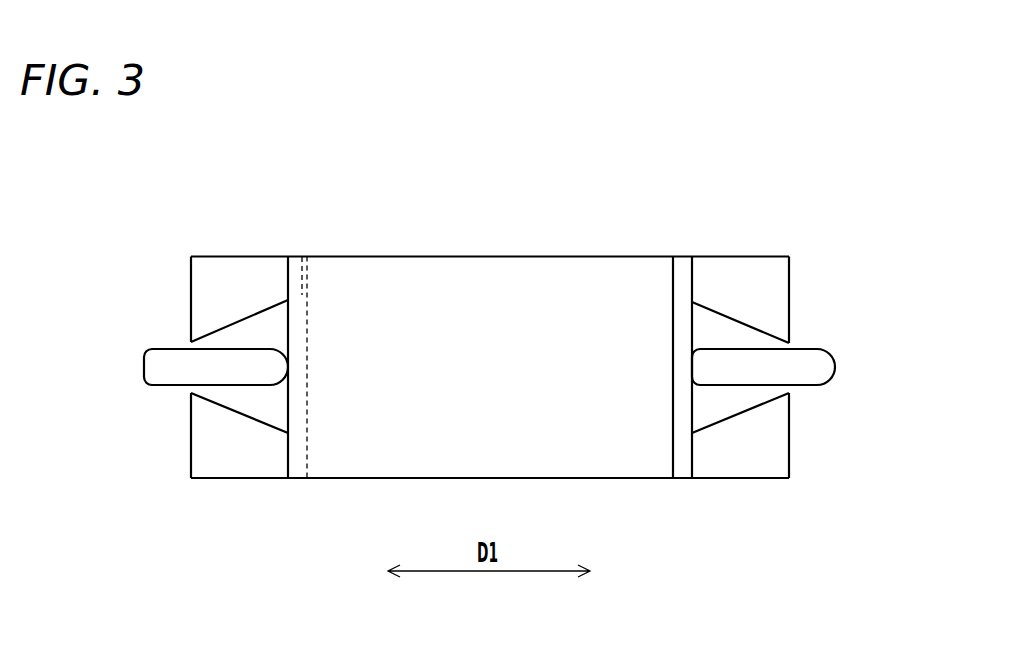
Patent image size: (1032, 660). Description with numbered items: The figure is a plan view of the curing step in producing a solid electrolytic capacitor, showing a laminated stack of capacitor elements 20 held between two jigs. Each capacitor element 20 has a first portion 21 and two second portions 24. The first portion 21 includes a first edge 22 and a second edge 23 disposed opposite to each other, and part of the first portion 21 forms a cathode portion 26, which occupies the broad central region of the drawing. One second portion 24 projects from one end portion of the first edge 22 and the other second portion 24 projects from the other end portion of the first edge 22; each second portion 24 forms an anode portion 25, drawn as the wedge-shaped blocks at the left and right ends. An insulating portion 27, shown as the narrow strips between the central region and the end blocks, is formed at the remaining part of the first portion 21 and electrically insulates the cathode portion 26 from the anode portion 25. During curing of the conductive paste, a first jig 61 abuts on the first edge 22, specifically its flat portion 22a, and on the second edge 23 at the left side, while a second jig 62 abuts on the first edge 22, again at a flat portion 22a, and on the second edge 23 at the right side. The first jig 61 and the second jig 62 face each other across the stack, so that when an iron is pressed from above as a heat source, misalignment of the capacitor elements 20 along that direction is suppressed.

The capacitor element 20 is at (403, 256).
The first portion 21 is at (473, 287).
The first edge 22 is at (692, 328).
The flat portion 22a is at (288, 400).
The second edge 23 is at (287, 327).
The second portion 24 is at (487, 360).
The anode portion 25 is at (202, 300).
The cathode portion 26 is at (565, 298).
The insulating portion 27 is at (302, 257).
The first jig 61 is at (157, 372).
The second jig 62 is at (825, 372).